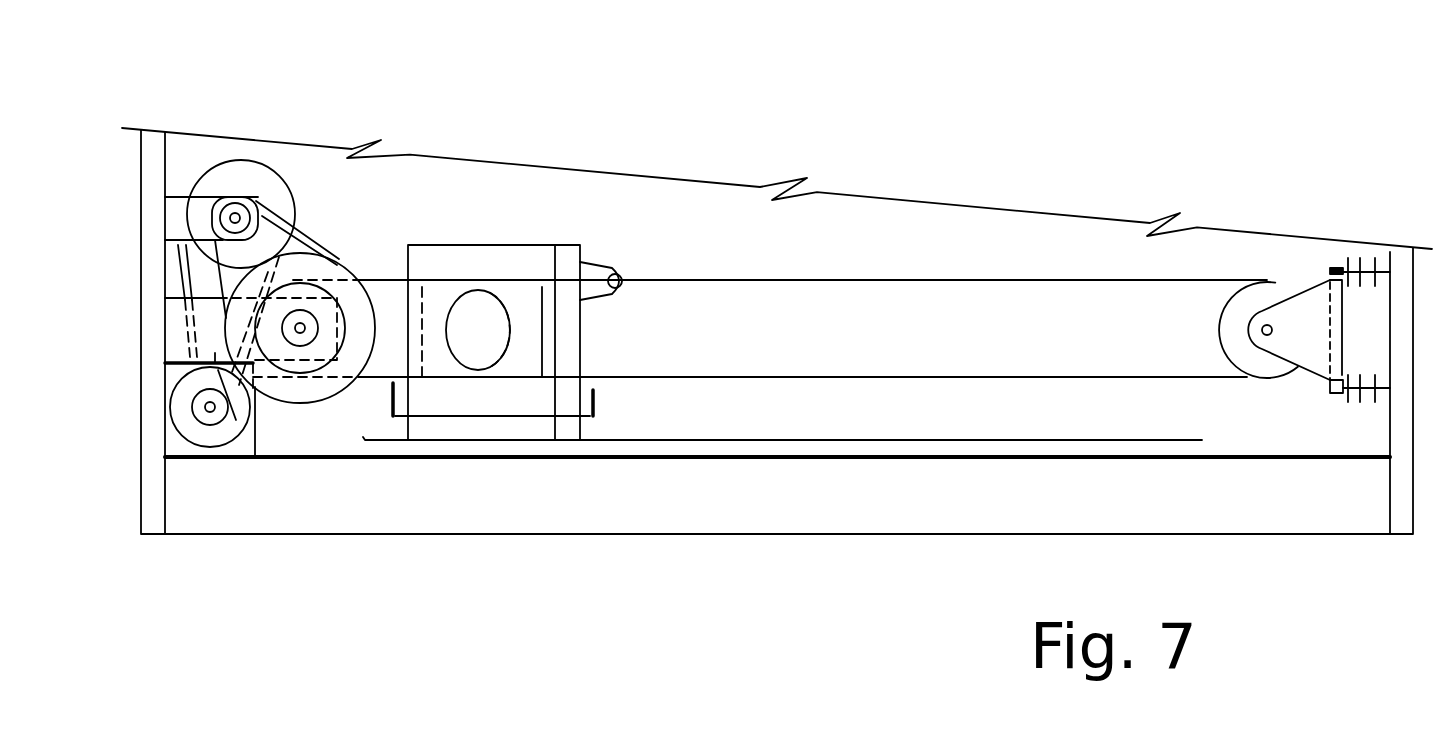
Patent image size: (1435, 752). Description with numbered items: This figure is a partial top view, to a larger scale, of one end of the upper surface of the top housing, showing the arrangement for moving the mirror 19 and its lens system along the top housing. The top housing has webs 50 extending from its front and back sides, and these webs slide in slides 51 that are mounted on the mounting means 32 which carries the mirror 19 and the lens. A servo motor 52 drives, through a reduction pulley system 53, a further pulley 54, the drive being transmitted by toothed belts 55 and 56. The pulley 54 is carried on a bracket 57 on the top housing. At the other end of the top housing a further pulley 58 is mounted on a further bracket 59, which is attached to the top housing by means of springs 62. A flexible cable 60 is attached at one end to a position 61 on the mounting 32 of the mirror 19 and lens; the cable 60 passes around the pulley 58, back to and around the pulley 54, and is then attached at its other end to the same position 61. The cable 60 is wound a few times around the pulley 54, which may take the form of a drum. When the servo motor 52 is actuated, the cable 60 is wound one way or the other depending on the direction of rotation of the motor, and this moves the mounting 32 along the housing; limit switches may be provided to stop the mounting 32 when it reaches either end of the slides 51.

The mirror 19 is at (503, 320).
The mounting means 32 is at (473, 245).
The webs 50 is at (315, 405).
The slides 51 is at (508, 455).
The servo motor 52 is at (202, 458).
The reduction pulley system 53 is at (245, 160).
The further pulley 54 is at (343, 260).
The toothed belt 55 is at (195, 197).
The toothed belt 56 is at (287, 255).
The bracket 57 is at (243, 458).
The further pulley 58 is at (1267, 280).
The further bracket 59 is at (1312, 293).
The flexible cable 60 is at (882, 378).
The position 61 is at (597, 260).
The springs 62 is at (1357, 373).